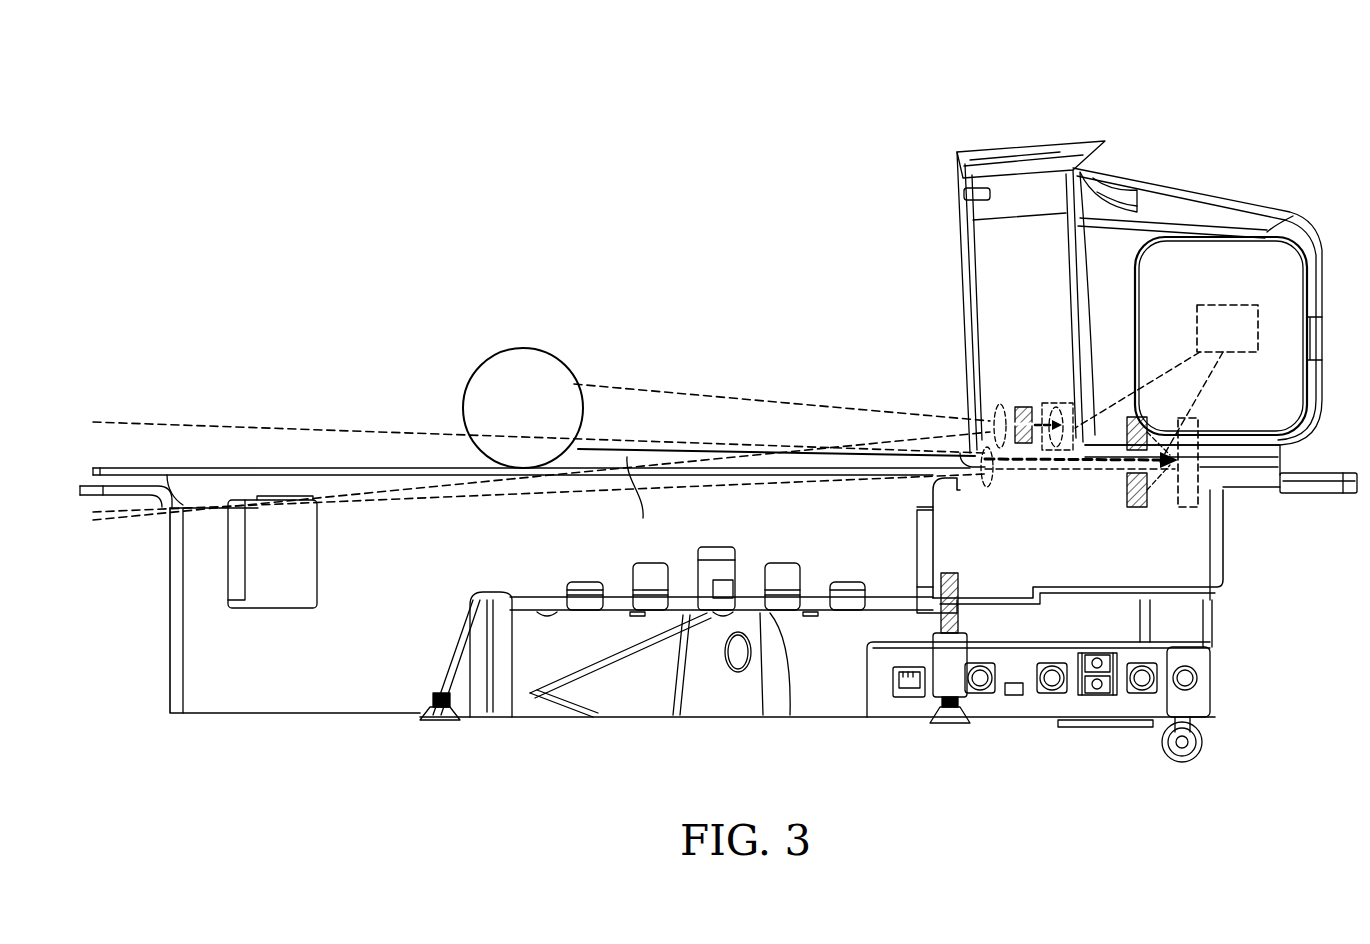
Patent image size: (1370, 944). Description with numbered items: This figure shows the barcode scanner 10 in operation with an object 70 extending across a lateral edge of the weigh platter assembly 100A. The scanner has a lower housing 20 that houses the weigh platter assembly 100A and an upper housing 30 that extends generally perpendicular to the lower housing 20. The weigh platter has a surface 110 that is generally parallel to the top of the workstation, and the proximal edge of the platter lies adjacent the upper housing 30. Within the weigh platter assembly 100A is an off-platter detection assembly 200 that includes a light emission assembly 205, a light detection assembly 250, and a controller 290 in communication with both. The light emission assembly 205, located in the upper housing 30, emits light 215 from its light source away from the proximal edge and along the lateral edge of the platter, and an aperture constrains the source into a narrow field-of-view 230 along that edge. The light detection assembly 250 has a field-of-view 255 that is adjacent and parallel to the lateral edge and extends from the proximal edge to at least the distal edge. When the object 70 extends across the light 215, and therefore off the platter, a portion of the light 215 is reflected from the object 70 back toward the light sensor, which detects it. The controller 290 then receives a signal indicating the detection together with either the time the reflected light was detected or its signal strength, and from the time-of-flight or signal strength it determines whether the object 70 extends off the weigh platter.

The barcode scanner 10 is at (815, 200).
The lower housing 20 is at (158, 608).
The upper housing 30 is at (1046, 126).
The object 70 is at (523, 348).
The weigh platter assembly 100A is at (290, 455).
The surface 110 is at (205, 468).
The off-platter detection assembly 200 is at (1095, 526).
The light emission assembly 205 is at (1033, 392).
The light 215 is at (633, 403).
The narrow field-of-view 230 is at (750, 400).
The light detection assembly 250 is at (1165, 518).
The field-of-view 255 is at (393, 500).
The controller 290 is at (1222, 305).